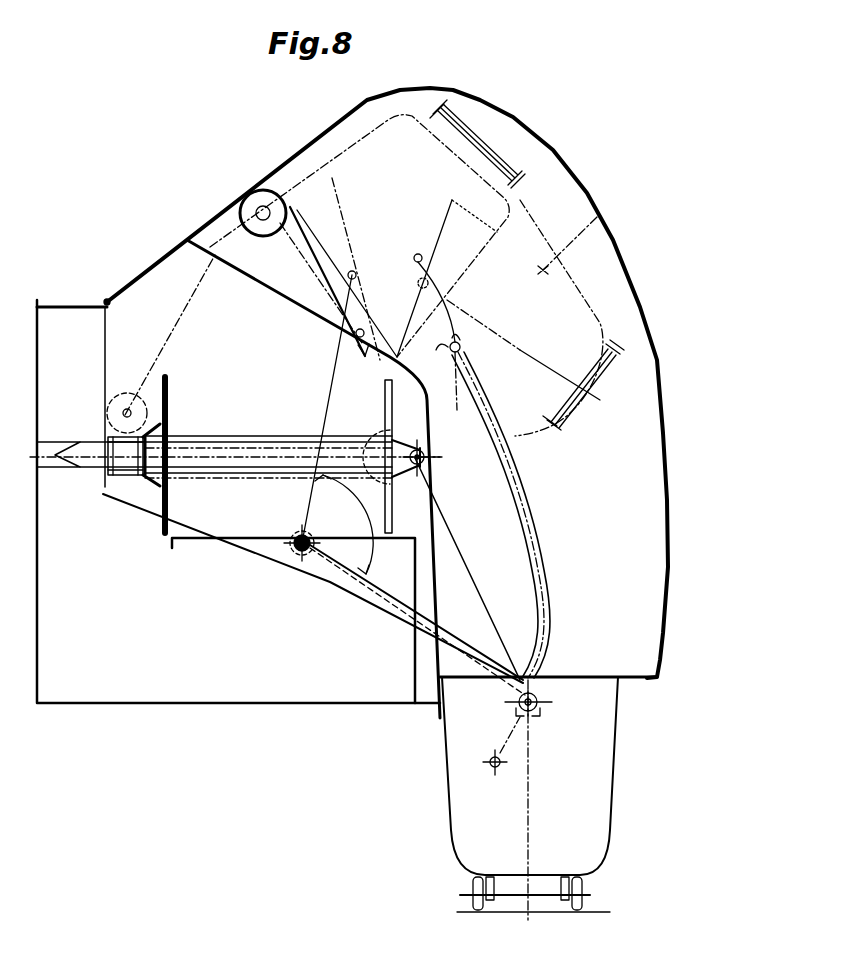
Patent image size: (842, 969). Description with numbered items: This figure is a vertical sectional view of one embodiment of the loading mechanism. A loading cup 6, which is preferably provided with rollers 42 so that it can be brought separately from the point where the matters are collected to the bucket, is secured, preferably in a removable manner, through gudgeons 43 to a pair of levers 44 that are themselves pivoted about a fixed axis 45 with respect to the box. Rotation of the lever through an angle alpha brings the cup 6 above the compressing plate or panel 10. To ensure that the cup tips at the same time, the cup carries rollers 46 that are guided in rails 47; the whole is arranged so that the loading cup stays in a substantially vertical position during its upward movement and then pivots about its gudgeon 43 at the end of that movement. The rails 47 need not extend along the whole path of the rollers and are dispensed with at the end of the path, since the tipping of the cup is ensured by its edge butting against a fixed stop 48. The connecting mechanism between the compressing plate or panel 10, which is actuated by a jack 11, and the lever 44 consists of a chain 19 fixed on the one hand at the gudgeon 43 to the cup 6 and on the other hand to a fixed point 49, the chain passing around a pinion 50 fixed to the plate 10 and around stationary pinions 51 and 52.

The loading cup 6 is at (393, 118).
The compressing plate or panel 10 is at (162, 517).
The jack 11 is at (217, 447).
The chain 19 is at (157, 333).
The rollers 42 is at (582, 893).
The gudgeons 43 is at (542, 704).
The levers 44 is at (465, 648).
The pivot 45 is at (308, 538).
The rollers 46 is at (418, 258).
The rails 47 is at (548, 540).
The fixed stop 48 is at (340, 342).
The fixed point 49 is at (113, 480).
The pinion 50 is at (170, 443).
The stationary pinion 51 is at (110, 408).
The stationary pinion 52 is at (258, 222).